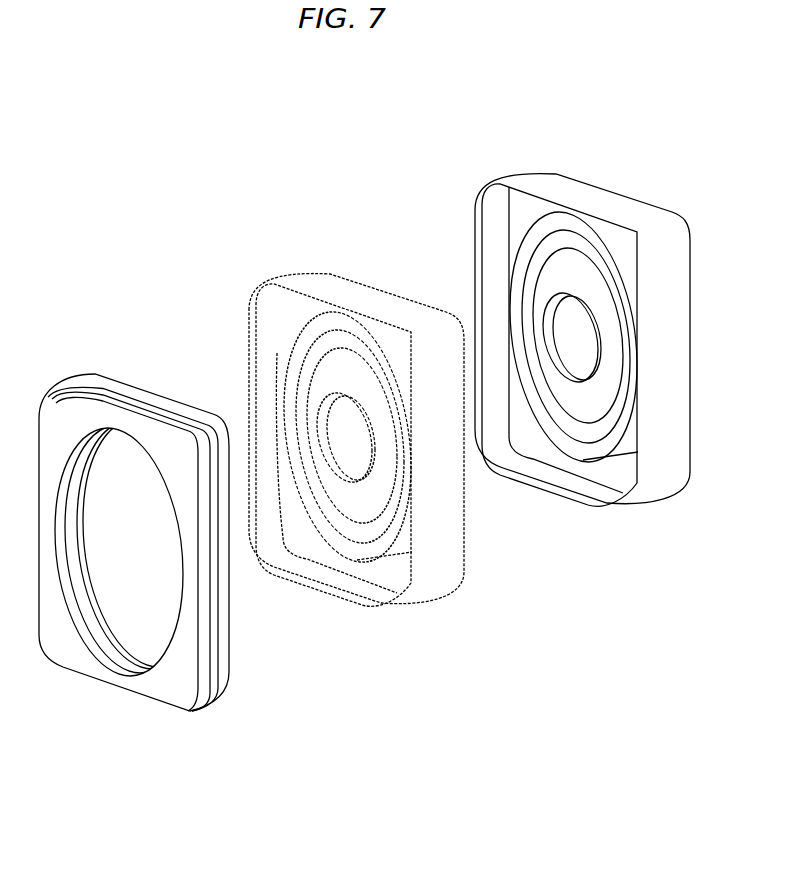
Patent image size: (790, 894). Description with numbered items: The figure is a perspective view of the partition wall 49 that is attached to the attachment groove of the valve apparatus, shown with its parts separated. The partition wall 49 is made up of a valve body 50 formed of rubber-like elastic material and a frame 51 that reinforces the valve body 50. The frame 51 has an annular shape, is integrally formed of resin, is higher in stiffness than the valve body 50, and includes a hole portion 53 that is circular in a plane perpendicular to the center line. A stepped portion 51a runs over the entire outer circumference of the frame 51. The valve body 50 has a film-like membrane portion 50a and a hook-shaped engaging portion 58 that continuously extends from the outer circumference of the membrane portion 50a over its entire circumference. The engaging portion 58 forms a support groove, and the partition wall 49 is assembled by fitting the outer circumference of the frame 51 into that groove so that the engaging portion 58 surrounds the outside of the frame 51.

The partition wall 49 is at (273, 627).
The valve body 50 is at (558, 492).
The membrane portion 50a is at (572, 267).
The frame 51 is at (168, 407).
The stepped portion 51a is at (110, 400).
The hole portion 53 is at (118, 618).
The engaging portion 58 is at (533, 183).